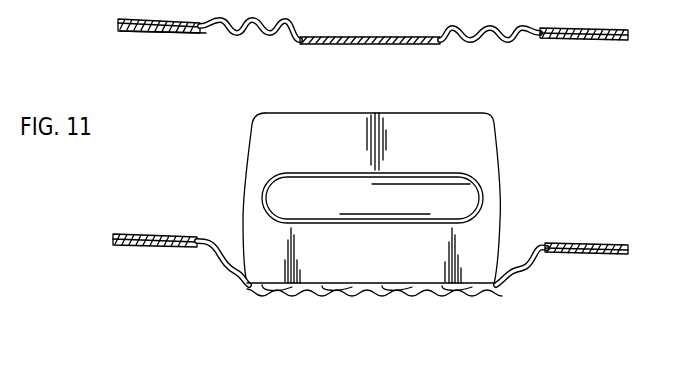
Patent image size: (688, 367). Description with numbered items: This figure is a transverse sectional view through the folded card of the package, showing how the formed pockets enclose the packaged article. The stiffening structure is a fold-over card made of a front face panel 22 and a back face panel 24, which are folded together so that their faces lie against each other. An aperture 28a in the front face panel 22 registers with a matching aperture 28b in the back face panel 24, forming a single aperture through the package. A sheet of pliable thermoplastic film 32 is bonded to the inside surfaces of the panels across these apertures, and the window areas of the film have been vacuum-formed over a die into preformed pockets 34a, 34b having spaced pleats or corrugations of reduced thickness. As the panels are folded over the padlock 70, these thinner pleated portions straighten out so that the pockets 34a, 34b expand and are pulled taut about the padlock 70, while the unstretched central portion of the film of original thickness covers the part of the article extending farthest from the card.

The front face panel 22 is at (140, 247).
The back face panel 24 is at (118, 20).
The front panel aperture 28a is at (541, 243).
The back panel aperture 28b is at (540, 35).
The pliable film 32 is at (145, 31).
The front pocket 34a is at (357, 290).
The back pocket 34b is at (346, 44).
The padlock 70 is at (421, 126).